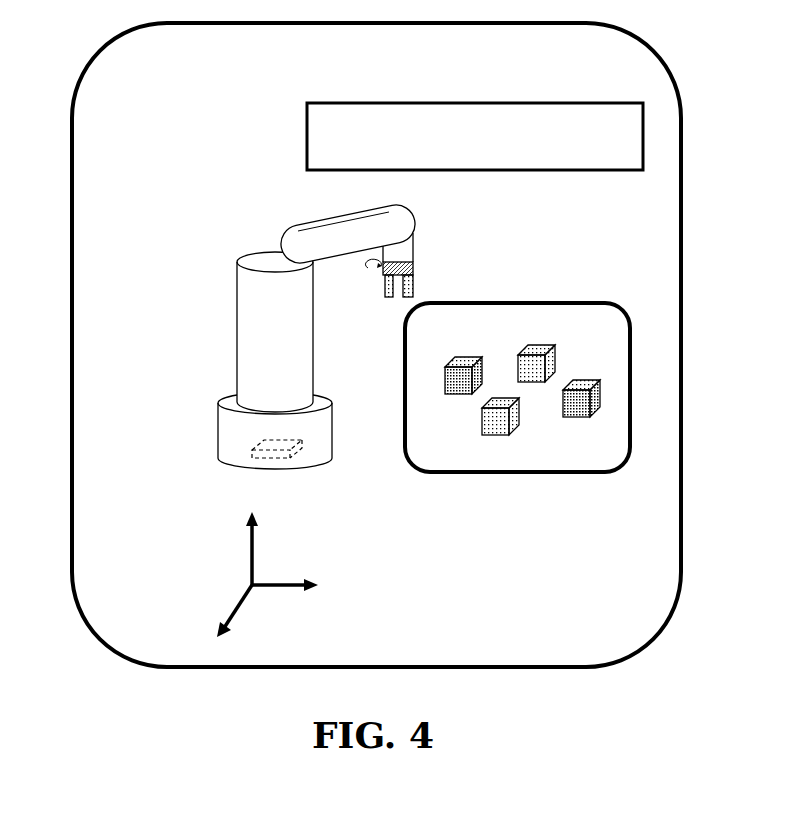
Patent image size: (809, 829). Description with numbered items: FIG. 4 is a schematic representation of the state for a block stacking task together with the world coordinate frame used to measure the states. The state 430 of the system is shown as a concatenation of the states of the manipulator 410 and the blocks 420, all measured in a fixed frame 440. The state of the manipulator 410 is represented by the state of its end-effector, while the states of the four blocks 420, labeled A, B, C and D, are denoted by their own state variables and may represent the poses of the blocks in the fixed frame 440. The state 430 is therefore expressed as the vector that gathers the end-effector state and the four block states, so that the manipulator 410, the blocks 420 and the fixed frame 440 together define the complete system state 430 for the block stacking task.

The manipulator 410 is at (232, 336).
The blocks 420 is at (630, 384).
The state of the system 430 is at (478, 103).
The fixed frame 440 is at (300, 597).